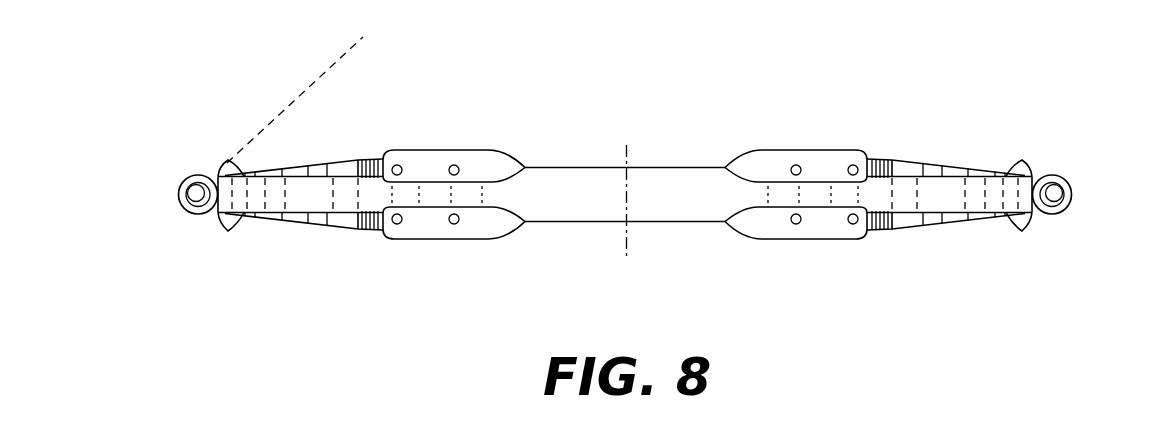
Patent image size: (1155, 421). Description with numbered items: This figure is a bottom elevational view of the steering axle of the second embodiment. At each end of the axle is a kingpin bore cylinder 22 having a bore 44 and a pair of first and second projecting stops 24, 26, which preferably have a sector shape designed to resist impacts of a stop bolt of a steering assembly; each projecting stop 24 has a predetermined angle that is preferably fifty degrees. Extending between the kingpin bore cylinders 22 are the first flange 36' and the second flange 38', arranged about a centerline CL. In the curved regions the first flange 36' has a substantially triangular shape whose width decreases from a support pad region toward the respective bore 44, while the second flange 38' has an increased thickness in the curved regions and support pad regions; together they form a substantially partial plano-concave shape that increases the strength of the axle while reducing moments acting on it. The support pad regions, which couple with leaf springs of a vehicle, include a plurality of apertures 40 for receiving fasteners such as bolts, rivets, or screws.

The kingpin bore cylinder 22 is at (181, 187).
The bore 44 is at (199, 199).
The first projecting stop 24 is at (226, 161).
The second projecting stop 26 is at (230, 233).
The second flange 38' is at (625, 159).
The first flange 36' is at (625, 163).
The apertures 40 is at (797, 223).
The centerline CL is at (627, 156).